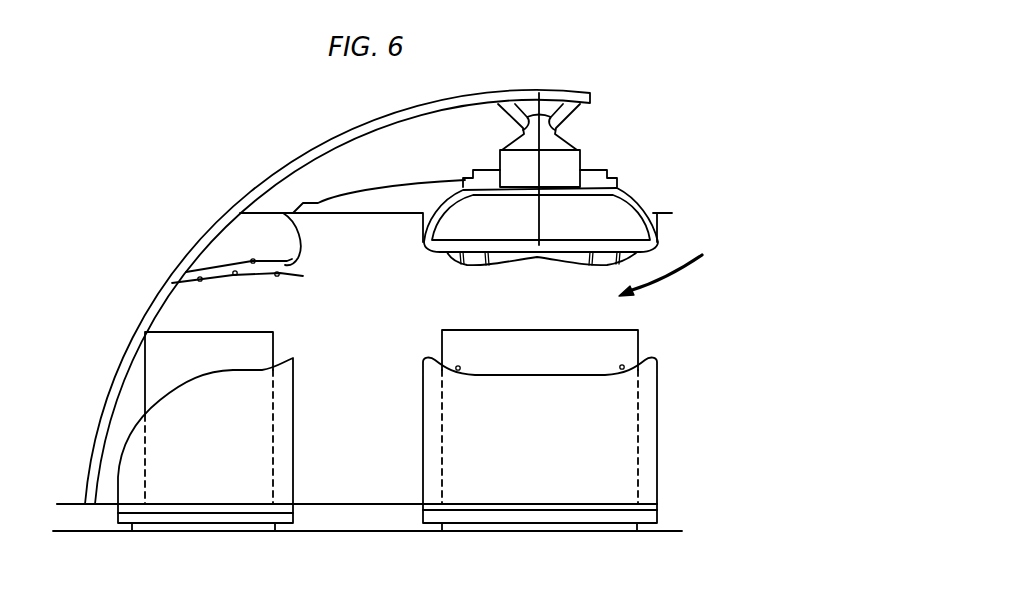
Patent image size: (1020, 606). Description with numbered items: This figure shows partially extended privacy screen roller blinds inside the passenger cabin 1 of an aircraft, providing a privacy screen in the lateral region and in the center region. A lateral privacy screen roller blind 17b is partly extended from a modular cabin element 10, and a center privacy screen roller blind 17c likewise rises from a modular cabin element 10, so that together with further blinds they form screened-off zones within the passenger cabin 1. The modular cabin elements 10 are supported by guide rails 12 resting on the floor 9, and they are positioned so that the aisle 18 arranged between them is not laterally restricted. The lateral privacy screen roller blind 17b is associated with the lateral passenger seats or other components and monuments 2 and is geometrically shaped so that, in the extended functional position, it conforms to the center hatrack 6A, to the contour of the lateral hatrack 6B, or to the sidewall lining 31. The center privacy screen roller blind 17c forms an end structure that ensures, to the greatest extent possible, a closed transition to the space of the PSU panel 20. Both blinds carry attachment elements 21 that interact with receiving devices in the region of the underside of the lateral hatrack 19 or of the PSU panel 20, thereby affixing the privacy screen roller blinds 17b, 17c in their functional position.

The passenger cabin 1 is at (668, 268).
The passenger seat 2 is at (156, 337).
The center hatrack 6A is at (606, 213).
The lateral hatrack 6B is at (227, 245).
The floor 9 is at (657, 532).
The modular cabin element 10 is at (127, 513).
The guide rail 12 is at (207, 530).
The lateral privacy screen roller blind 17b is at (134, 428).
The center privacy screen roller blind 17c is at (657, 448).
The aisle 18 is at (353, 482).
The underside of the lateral hatrack 19 is at (252, 263).
The PSU panel 20 is at (236, 274).
The attachment element 21 is at (210, 370).
The sidewall lining 31 is at (90, 457).